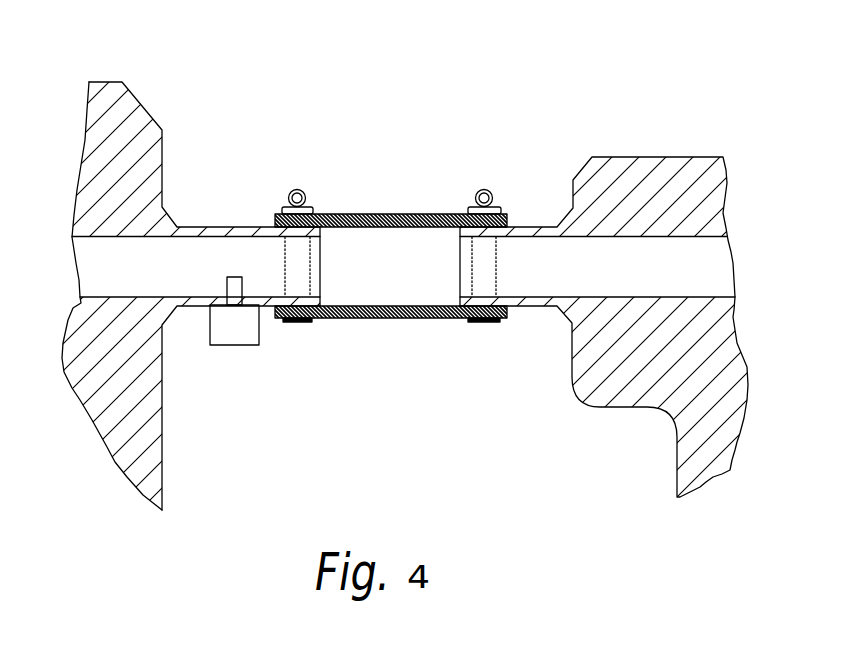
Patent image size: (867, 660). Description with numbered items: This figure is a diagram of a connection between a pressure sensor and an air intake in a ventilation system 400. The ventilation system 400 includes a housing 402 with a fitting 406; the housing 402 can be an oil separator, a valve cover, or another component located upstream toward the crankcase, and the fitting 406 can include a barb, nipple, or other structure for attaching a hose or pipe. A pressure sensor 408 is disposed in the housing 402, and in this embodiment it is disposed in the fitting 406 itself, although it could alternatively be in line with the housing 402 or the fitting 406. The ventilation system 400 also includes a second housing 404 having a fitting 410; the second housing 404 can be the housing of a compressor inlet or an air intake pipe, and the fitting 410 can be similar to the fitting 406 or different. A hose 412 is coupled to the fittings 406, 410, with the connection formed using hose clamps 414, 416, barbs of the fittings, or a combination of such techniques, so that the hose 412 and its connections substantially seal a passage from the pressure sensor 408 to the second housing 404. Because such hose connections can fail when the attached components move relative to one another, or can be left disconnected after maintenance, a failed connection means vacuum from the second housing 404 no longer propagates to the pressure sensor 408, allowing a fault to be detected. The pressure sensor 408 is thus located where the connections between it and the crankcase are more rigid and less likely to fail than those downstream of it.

The ventilation system 400 is at (602, 123).
The housing 402 is at (148, 112).
The second housing 404 is at (623, 408).
The fitting 406 is at (202, 306).
The pressure sensor 408 is at (259, 337).
The fitting 410 is at (527, 306).
The hose 412 is at (392, 213).
The hose clamp 414 is at (282, 206).
The hose clamp 416 is at (497, 206).